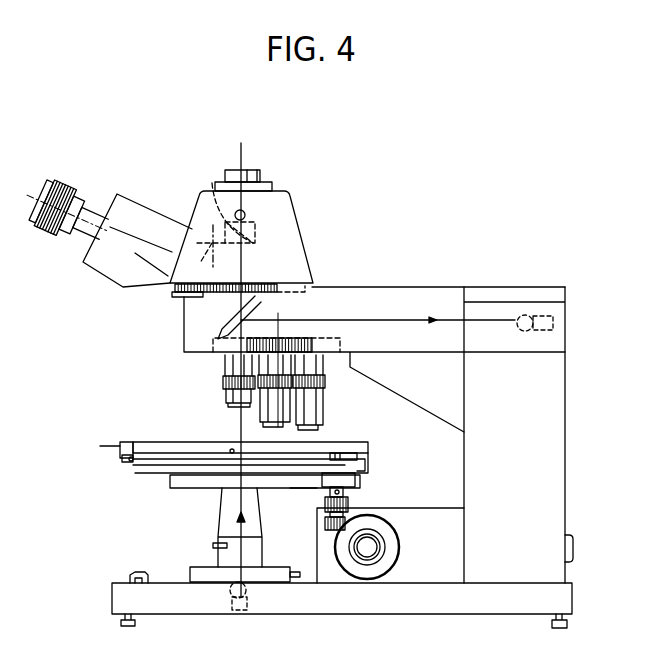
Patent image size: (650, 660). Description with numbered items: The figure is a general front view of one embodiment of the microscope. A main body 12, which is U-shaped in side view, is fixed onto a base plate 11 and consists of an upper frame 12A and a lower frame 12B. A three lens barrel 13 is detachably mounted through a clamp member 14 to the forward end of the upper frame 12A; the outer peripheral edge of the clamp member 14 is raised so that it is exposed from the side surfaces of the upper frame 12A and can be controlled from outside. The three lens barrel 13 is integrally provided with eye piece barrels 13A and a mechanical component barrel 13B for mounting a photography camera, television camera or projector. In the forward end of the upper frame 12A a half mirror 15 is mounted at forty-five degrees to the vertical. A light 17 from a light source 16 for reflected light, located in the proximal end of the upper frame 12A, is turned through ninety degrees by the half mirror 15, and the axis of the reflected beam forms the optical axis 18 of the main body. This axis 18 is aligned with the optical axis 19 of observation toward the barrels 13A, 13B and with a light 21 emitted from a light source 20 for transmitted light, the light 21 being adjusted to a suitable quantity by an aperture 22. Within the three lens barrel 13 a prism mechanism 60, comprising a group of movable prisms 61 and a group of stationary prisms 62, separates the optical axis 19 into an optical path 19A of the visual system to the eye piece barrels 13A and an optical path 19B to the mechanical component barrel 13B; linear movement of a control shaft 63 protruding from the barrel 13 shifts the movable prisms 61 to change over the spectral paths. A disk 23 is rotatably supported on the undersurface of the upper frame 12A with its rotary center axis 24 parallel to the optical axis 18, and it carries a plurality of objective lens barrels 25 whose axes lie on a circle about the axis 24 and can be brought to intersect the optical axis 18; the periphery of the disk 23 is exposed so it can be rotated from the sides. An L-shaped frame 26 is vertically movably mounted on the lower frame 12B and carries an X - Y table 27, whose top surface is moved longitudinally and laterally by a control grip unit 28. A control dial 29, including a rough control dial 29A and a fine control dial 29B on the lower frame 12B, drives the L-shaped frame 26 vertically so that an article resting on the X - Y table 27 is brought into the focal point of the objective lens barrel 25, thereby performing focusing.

The base plate 11 is at (454, 609).
The main body 12 is at (567, 385).
The upper frame 12A is at (355, 285).
The lower frame 12B is at (417, 507).
The three lens barrel 13 is at (191, 186).
The eye piece barrels 13A is at (131, 192).
The mechanical component barrel 13B is at (266, 186).
The clamp member 14 is at (182, 296).
The half mirror 15 is at (235, 320).
The light source for a reflected light 16 is at (553, 324).
The light 17 is at (413, 319).
The optical axis of the main body 18 is at (240, 412).
The optical axis of observation 19 is at (243, 263).
The optical path of a visual system 19A is at (150, 278).
The optical path 19B is at (240, 150).
The light source for a transmitted light 20 is at (228, 597).
The light 21 is at (236, 557).
The aperture 22 is at (222, 536).
The disk 23 is at (243, 342).
The rotary center axis 24 is at (285, 436).
The objective lens barrels 25 is at (232, 366).
The L-shaped frame 26 is at (170, 483).
The X - Y table 27 is at (132, 445).
The control grip unit 28 is at (348, 505).
The control dial 29 is at (402, 537).
The rough control dial 29A is at (398, 553).
The fine control dial 29B is at (367, 556).
The prism mechanism 60 is at (197, 231).
The group of movable prisms 61 is at (257, 228).
The group of stationary prisms 62 is at (212, 182).
The control shaft 63 is at (246, 212).